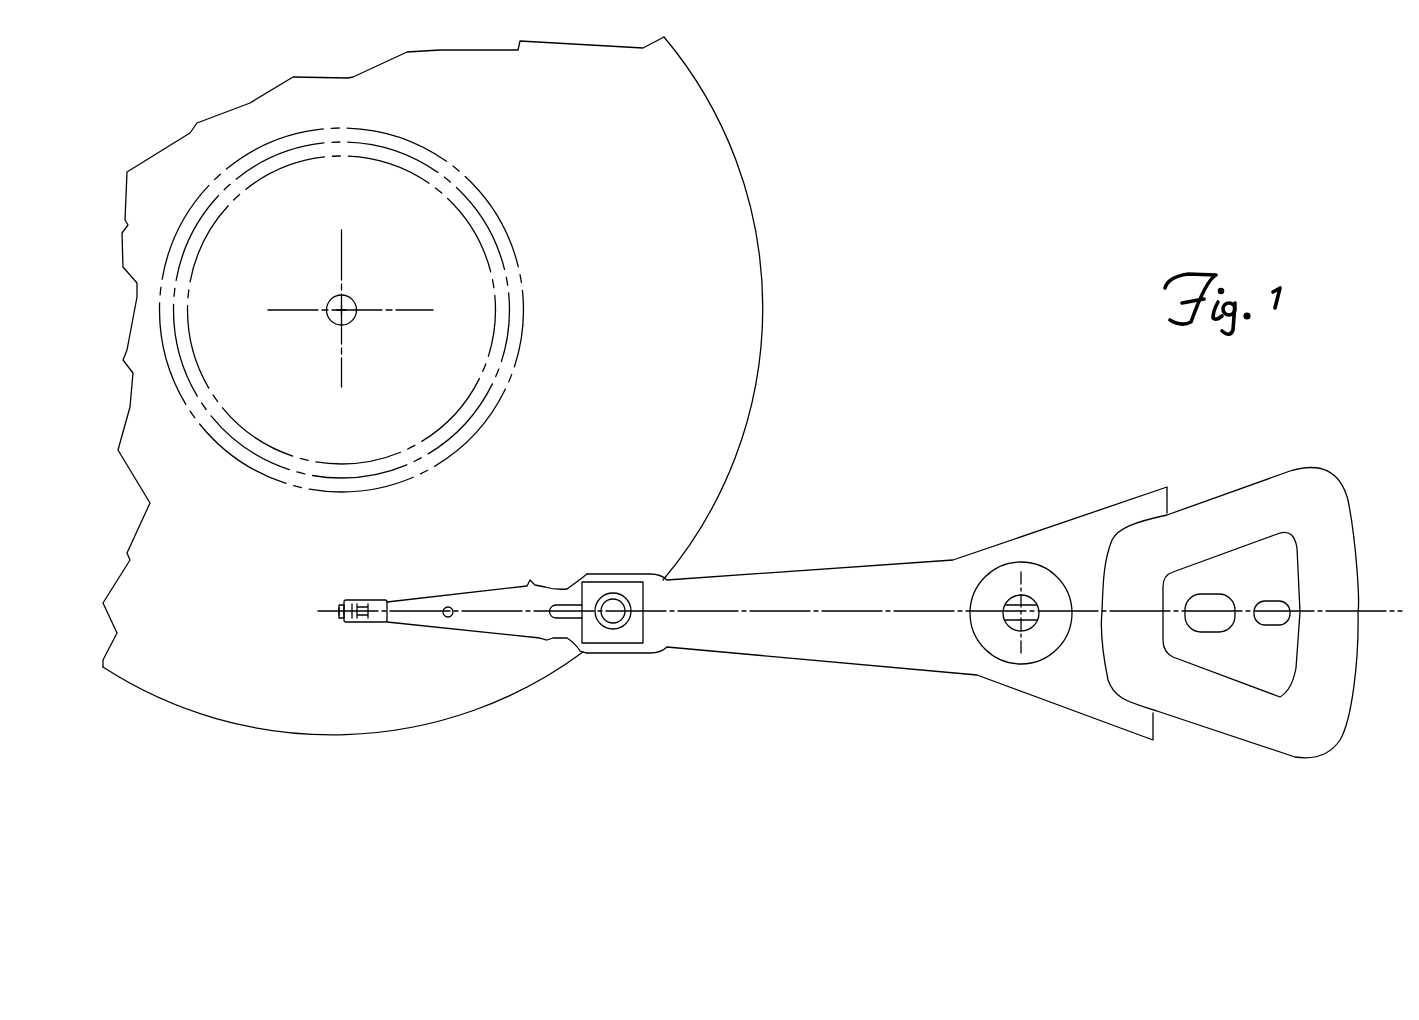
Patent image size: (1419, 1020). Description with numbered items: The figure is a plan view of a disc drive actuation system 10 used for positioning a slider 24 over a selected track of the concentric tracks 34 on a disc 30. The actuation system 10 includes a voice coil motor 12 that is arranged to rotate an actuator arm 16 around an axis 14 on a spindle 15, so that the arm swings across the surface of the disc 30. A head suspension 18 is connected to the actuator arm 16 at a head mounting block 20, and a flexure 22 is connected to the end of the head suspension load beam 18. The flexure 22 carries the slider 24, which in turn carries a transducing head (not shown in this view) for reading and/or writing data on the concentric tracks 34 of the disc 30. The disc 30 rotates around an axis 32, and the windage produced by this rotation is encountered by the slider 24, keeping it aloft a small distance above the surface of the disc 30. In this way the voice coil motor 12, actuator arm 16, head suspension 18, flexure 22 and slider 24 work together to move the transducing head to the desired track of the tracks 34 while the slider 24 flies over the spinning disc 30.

The disc drive actuation system 10 is at (948, 455).
The voice coil motor 12 is at (1328, 472).
The axis 14 is at (1012, 622).
The spindle 15 is at (1032, 598).
The actuator arm 16 is at (777, 570).
The head suspension 18 is at (457, 592).
The head mounting block 20 is at (610, 582).
The flexure 22 is at (358, 600).
The slider 24 is at (342, 611).
The disc 30 is at (747, 423).
The axis 32 is at (351, 301).
The tracks 34 is at (300, 483).